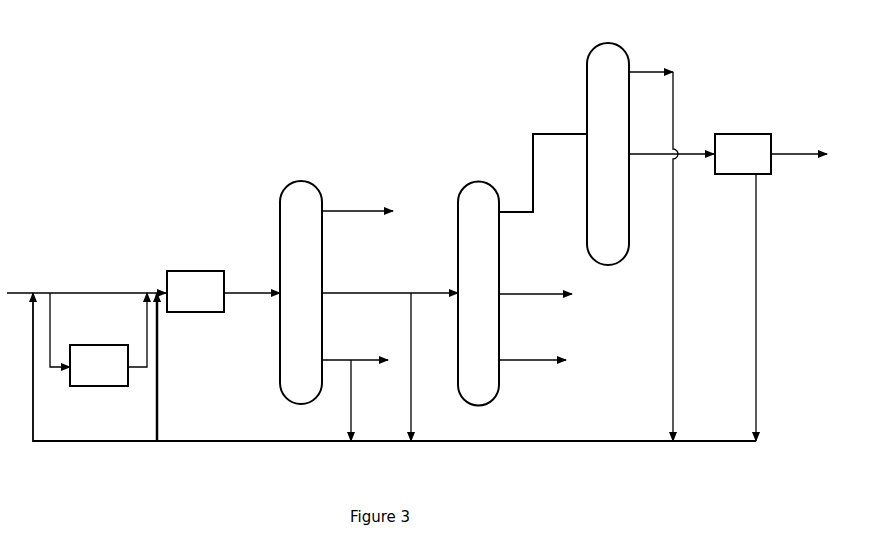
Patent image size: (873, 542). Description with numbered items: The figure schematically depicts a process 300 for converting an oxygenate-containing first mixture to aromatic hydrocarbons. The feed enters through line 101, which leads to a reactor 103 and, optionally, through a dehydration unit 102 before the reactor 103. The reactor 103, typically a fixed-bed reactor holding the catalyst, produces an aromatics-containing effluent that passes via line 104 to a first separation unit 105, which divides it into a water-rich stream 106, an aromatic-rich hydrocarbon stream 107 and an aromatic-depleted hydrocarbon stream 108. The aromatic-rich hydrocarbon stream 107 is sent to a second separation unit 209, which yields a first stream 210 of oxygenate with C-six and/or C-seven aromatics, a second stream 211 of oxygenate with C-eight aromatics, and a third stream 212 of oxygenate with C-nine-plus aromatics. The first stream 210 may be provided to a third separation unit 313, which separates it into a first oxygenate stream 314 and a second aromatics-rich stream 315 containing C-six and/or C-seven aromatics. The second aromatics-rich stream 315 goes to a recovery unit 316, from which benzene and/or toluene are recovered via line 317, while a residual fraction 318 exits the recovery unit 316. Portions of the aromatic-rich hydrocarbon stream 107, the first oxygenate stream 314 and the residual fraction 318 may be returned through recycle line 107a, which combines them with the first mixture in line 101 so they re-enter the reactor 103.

The process 300 is at (128, 115).
The line 101 is at (70, 292).
The dehydration unit 102 is at (98, 339).
The reactor 103 is at (195, 291).
The line 104 is at (258, 292).
The first separation unit 105 is at (301, 292).
The water-rich stream 106 is at (367, 210).
The aromatic-rich hydrocarbon stream 107 is at (365, 293).
The aromatic-depleted hydrocarbon stream 108 is at (370, 358).
The second separation unit 209 is at (478, 293).
The first stream 210 is at (550, 130).
The second stream 211 is at (518, 293).
The third stream 212 is at (530, 355).
The third separation unit 313 is at (608, 154).
The first oxygenate stream 314 is at (648, 70).
The second aromatics-rich stream 315 is at (656, 157).
The recovery unit 316 is at (743, 154).
The line 317 is at (793, 152).
The residual fraction 318 is at (752, 207).
The recycle line 107a is at (569, 440).